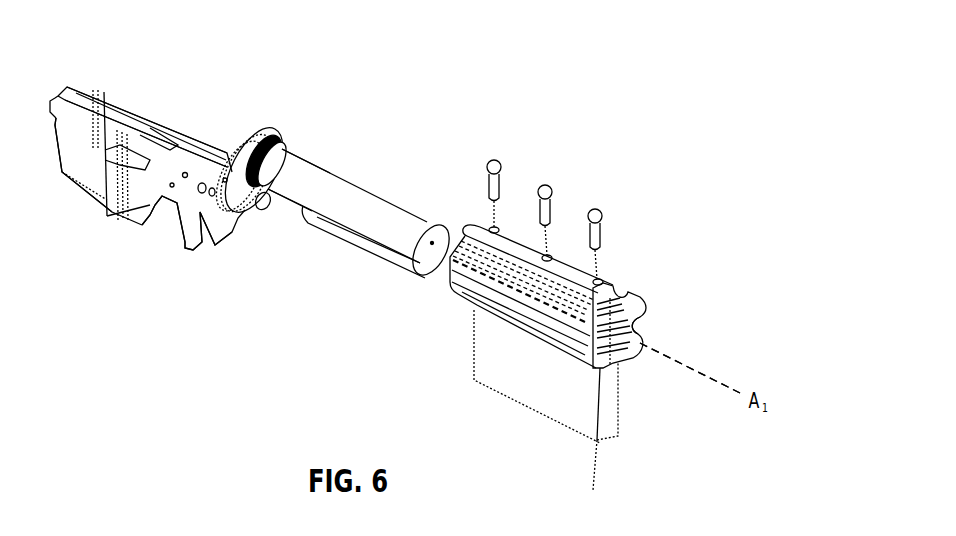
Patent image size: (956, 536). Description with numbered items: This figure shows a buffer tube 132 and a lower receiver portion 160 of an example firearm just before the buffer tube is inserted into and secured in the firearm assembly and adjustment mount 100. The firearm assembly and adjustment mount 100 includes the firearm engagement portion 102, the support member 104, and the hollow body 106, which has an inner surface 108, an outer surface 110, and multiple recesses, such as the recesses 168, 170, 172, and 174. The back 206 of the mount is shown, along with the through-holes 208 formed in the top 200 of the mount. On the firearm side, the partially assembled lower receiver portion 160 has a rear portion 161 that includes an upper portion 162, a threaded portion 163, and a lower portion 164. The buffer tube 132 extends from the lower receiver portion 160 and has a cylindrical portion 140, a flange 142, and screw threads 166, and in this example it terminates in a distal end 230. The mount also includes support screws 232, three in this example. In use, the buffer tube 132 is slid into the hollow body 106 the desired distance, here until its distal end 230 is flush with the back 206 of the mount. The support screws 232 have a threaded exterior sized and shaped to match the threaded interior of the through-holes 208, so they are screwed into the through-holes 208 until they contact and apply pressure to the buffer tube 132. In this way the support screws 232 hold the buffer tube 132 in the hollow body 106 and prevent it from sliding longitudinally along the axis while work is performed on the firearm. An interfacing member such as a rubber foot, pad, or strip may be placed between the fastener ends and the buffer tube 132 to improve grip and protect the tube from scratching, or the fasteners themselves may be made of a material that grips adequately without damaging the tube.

The firearm assembly and adjustment mount 100 is at (683, 219).
The firearm engagement portion 102 is at (472, 295).
The support member 104 is at (520, 390).
The hollow body 106 is at (605, 338).
The inner surface 108 is at (638, 317).
The outer surface 110 is at (490, 302).
The buffer tube 132 is at (297, 195).
The cylindrical portion 140 is at (338, 180).
The flange 142 is at (355, 240).
The lower receiver portion 160 is at (214, 76).
The rear portion 161 is at (200, 138).
The upper portion 162 is at (163, 106).
The threaded portion 163 is at (268, 133).
The lower portion 164 is at (124, 247).
The screw threads 166 is at (280, 147).
The recess 168 is at (613, 292).
The recess 170 is at (600, 338).
The recess 172 is at (613, 365).
The recess 174 is at (640, 328).
The top 200 is at (618, 249).
The back 206 is at (645, 369).
The through-holes 208 is at (495, 229).
The distal end 230 is at (433, 230).
The support screws 232 is at (500, 165).